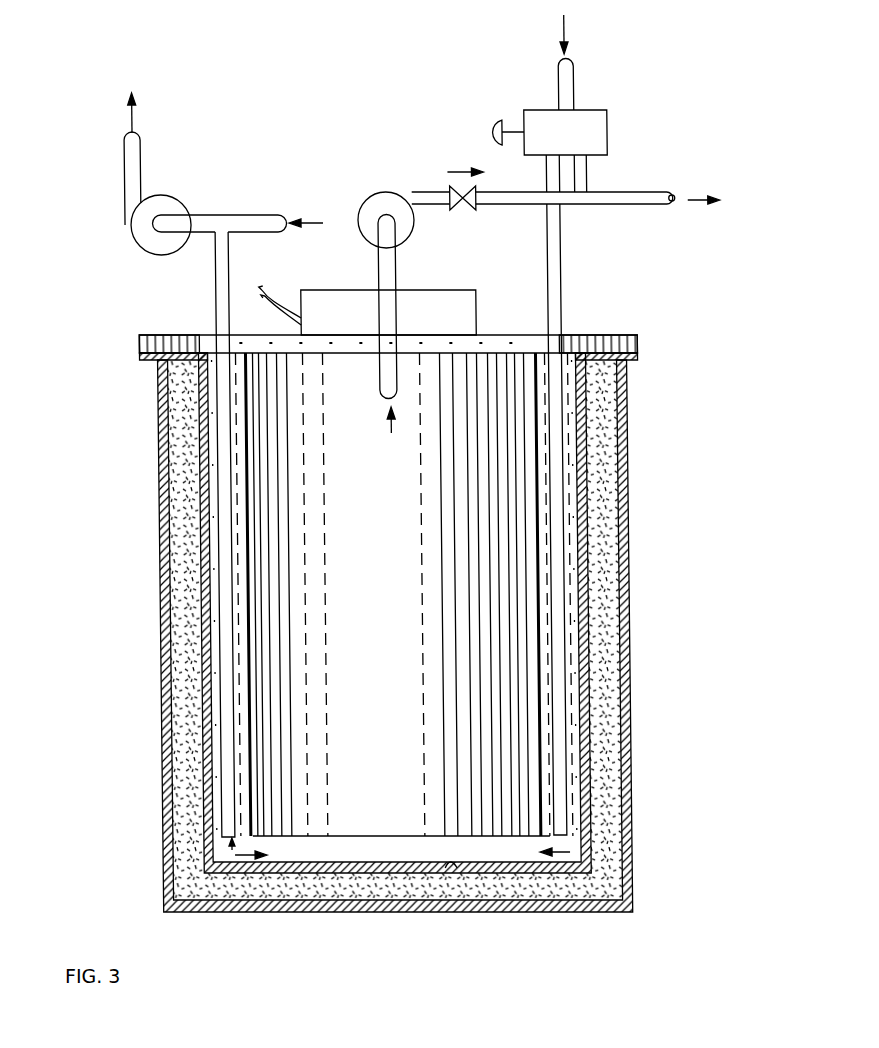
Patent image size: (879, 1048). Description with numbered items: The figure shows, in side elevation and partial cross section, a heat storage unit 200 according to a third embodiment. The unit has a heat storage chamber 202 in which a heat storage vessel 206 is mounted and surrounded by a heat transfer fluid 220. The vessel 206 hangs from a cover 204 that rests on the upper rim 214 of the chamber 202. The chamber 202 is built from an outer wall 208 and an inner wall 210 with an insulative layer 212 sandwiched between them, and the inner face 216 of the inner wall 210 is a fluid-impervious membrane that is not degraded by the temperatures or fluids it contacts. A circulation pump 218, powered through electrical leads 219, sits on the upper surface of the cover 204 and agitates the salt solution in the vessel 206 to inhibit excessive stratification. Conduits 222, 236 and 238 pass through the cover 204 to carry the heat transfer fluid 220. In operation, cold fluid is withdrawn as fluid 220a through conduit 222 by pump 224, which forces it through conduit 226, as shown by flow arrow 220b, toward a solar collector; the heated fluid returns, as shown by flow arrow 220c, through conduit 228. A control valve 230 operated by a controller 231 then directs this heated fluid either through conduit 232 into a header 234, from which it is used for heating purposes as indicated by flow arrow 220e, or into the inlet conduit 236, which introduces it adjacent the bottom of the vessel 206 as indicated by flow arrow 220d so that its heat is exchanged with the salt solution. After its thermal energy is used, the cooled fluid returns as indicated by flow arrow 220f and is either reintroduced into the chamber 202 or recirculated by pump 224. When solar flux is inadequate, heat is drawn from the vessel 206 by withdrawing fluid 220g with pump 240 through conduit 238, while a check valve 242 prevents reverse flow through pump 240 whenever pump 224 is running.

The heat storage unit 200 is at (648, 334).
The heat storage chamber 202 is at (628, 636).
The cover 204 is at (592, 337).
The heat storage vessel 206 is at (525, 722).
The outer wall 208 is at (628, 765).
The inner wall 210 is at (585, 810).
The insulative layer 212 is at (600, 866).
The upper rim 214 is at (628, 358).
The inner face 216 is at (445, 868).
The circulation pump 218 is at (462, 290).
The electrical leads 219 is at (268, 288).
The heat transfer fluid 220 is at (335, 855).
The withdrawn heat transfer fluid 220a is at (240, 862).
The flow arrow 220b is at (137, 125).
The flow arrow 220c is at (572, 24).
The flow arrow 220d is at (560, 862).
The flow arrow 220e is at (698, 197).
The flow arrow 220f is at (317, 213).
The withdrawn heat transfer fluid 220g is at (393, 435).
The conduit 222 is at (224, 490).
The pump 224 is at (150, 247).
The conduit 226 is at (133, 166).
The conduit 228 is at (578, 82).
The control valve 230 is at (606, 128).
The controller 231 is at (500, 120).
The conduit 232 is at (590, 175).
The header 234 is at (658, 205).
The inlet conduit 236 is at (556, 258).
The conduit 238 is at (400, 268).
The pump 240 is at (380, 205).
The check valve 242 is at (455, 186).